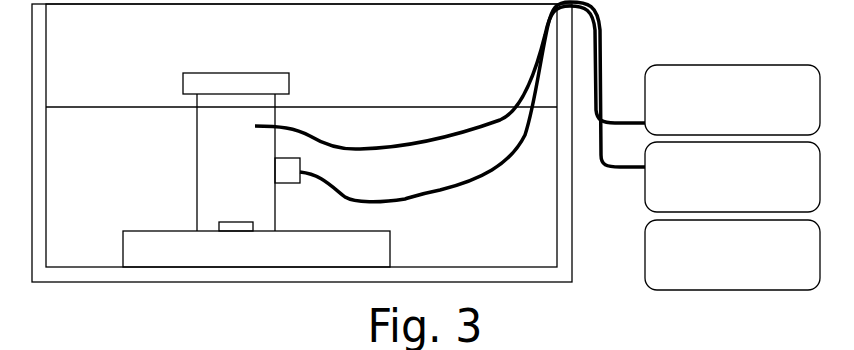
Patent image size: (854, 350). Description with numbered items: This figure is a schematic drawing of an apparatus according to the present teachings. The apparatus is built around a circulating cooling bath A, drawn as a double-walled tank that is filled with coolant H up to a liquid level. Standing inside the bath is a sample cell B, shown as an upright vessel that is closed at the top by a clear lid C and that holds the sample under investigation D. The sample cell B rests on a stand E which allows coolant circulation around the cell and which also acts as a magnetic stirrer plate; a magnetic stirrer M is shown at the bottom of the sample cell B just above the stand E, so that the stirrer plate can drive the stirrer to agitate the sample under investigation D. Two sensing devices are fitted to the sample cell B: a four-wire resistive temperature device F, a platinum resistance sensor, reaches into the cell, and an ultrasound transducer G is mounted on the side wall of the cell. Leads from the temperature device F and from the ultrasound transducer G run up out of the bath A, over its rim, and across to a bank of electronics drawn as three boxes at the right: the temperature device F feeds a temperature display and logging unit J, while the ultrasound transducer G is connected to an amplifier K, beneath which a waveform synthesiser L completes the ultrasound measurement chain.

The circulating cooling bath A is at (302, 143).
The sample cell B is at (223, 162).
The clear lid C is at (236, 69).
The sample under investigation D is at (236, 162).
The stand and magnetic stirrer plate E is at (256, 249).
The 4 wire resistive temperature device (PT-100) F is at (450, 77).
The ultrasound transducer G is at (460, 110).
The coolant H is at (301, 187).
The temperature display and logging J is at (732, 100).
The amplifier K is at (732, 177).
The waveform synthesiser L is at (732, 255).
The magnetic stirrer M is at (236, 211).